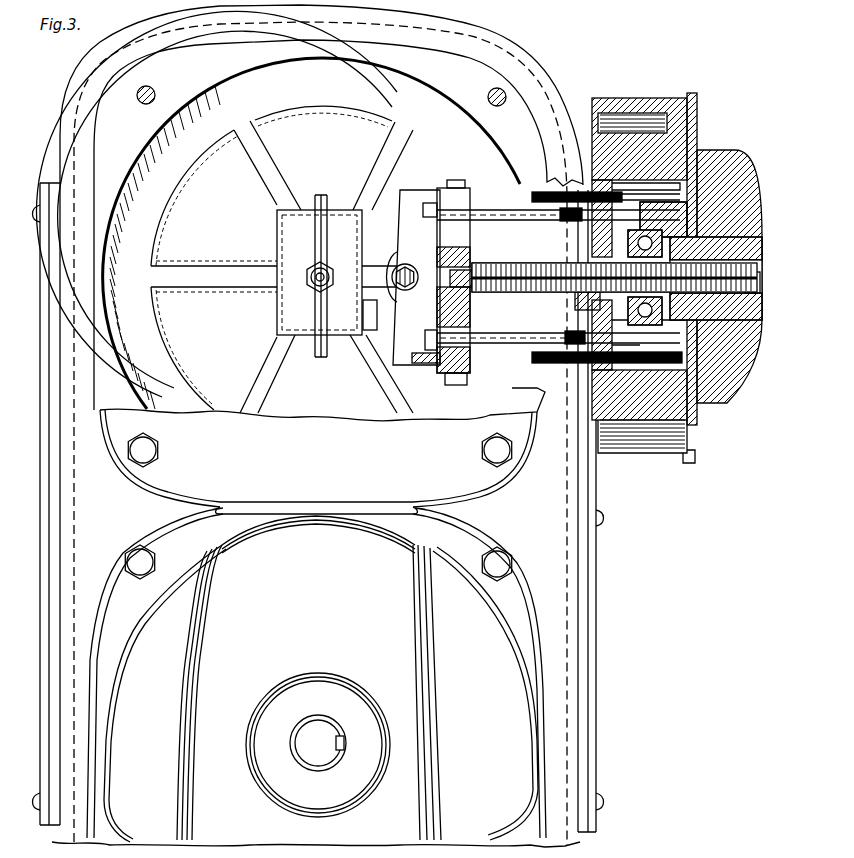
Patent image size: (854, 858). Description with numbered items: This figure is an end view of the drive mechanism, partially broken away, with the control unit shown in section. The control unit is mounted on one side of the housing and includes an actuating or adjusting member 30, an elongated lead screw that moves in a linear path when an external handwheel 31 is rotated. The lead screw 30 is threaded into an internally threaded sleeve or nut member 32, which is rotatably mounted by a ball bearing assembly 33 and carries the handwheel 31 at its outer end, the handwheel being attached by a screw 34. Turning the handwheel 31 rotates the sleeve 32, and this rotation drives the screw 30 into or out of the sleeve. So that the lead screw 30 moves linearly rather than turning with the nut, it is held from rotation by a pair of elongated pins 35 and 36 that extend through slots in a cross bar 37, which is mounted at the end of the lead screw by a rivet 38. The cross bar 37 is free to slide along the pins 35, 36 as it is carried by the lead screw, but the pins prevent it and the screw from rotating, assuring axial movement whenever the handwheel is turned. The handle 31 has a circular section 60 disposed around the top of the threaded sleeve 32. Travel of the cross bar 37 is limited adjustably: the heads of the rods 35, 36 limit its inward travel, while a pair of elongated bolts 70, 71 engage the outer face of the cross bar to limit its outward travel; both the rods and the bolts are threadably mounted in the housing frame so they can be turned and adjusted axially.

The adjusting member 30 is at (506, 262).
The handwheel 31 is at (742, 212).
The internally threaded sleeve 32 is at (577, 298).
The ball bearing assembly 33 is at (662, 313).
The screw 34 is at (755, 295).
The elongated pin 35 is at (490, 212).
The elongated pin 36 is at (497, 345).
The cross bar 37 is at (437, 234).
The rivet 38 is at (472, 284).
The circular section 60 is at (726, 395).
The elongated bolt 70 is at (556, 192).
The elongated bolt 71 is at (557, 365).